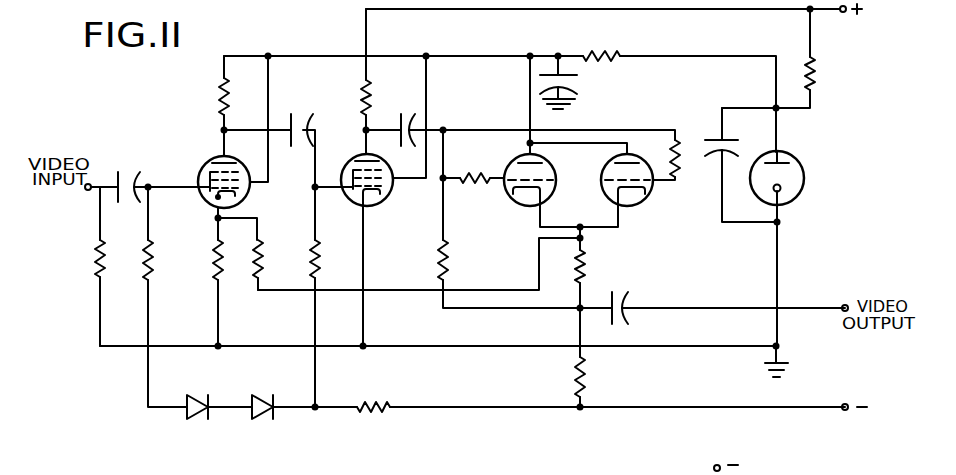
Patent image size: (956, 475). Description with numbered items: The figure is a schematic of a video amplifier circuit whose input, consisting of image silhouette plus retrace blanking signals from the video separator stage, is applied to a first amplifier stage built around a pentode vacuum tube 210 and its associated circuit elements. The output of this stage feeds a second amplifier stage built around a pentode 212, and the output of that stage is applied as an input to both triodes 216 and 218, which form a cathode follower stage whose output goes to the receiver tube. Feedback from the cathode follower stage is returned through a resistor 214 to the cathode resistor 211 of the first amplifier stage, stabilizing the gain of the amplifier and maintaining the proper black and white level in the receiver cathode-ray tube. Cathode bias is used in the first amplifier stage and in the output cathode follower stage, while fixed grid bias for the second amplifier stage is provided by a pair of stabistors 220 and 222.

The pentode vacuum tube 210 is at (206, 160).
The cathode resistor 211 is at (213, 262).
The pentode 212 is at (377, 204).
The resistor 214 is at (247, 267).
The triode 216 is at (509, 195).
The triode 218 is at (638, 206).
The stabistor 220 is at (192, 417).
The stabistor 222 is at (257, 420).